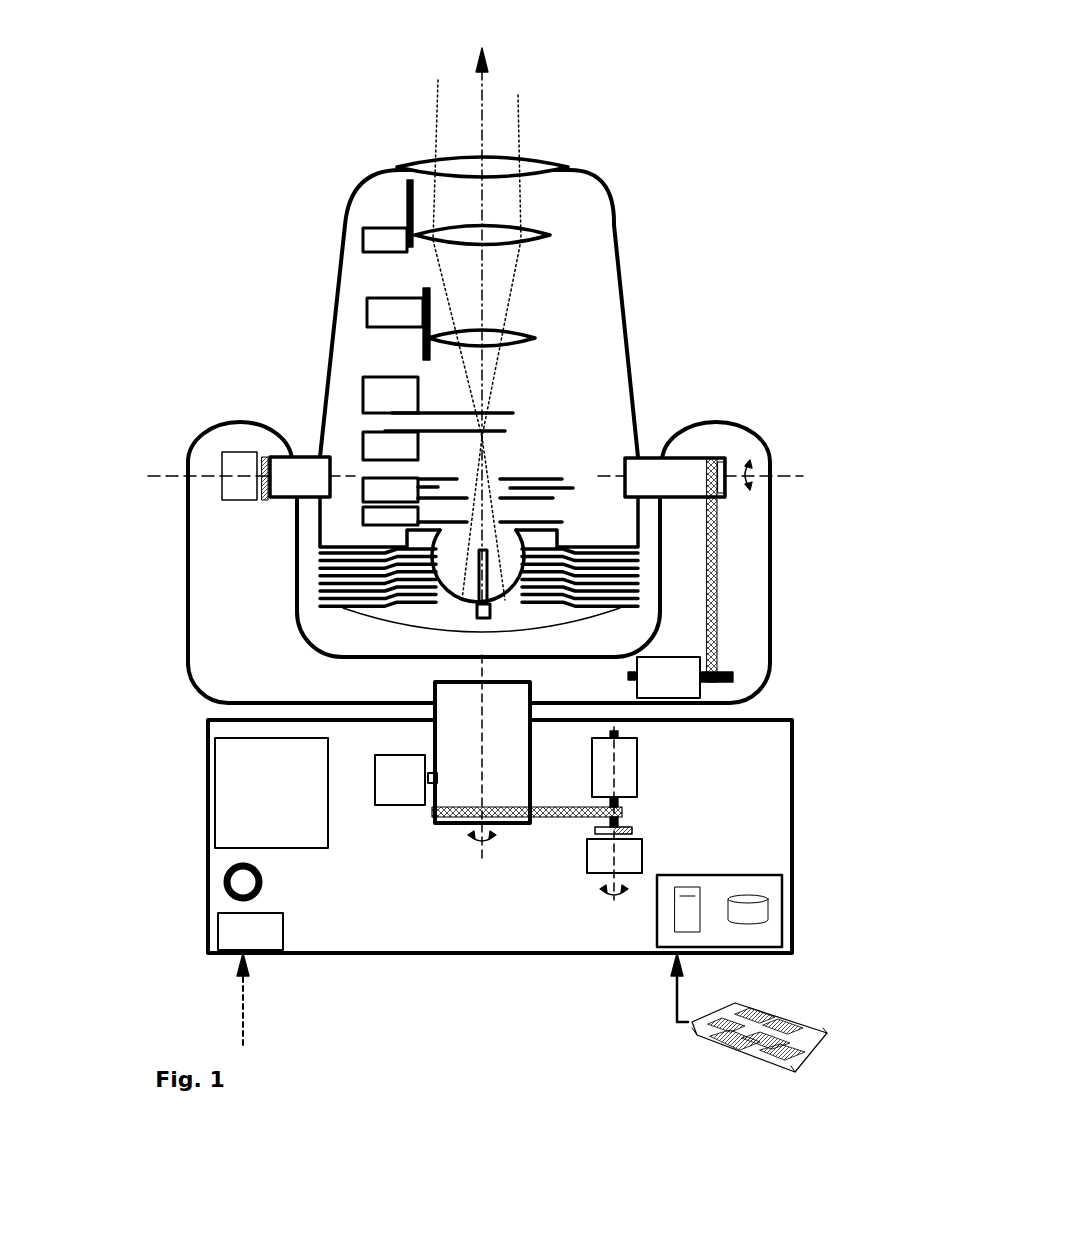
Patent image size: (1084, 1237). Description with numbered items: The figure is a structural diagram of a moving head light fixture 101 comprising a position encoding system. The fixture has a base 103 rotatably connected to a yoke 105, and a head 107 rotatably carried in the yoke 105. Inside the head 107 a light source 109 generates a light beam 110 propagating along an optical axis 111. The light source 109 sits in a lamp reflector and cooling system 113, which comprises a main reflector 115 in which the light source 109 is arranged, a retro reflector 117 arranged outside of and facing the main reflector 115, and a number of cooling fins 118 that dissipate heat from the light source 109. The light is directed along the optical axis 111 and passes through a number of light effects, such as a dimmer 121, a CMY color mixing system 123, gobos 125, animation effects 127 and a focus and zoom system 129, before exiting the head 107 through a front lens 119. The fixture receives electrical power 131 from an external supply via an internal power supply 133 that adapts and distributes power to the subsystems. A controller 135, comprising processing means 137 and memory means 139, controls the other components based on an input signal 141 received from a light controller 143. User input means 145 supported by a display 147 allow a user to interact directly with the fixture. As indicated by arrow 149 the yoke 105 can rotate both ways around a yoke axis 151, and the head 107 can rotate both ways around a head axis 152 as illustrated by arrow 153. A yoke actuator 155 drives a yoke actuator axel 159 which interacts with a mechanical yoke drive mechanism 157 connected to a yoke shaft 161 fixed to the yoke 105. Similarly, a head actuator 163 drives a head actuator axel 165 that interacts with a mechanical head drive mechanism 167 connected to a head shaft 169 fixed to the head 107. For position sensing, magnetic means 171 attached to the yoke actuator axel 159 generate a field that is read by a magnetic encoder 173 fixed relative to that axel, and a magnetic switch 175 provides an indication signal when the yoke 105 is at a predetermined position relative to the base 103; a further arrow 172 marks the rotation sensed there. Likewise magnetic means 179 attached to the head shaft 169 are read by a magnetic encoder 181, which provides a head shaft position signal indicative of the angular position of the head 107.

The moving head light fixture 101 is at (222, 64).
The base 103 is at (427, 957).
The yoke 105 is at (227, 425).
The head 107 is at (353, 200).
The light source 109 is at (483, 600).
The light beam 110 is at (436, 110).
The optical axis 111 is at (480, 90).
The lamp reflector and cooling system 113 is at (372, 536).
The main reflector 115 is at (503, 533).
The retro reflector 117 is at (453, 548).
The cooling fins 118 is at (315, 620).
The front lens 119 is at (404, 158).
The dimmer 121 is at (462, 515).
The CMY color mixing system 123 is at (468, 490).
The gobos 125 is at (434, 445).
The animation effects 127 is at (438, 395).
The focus and zoom system 129 is at (557, 198).
The electrical power 131 is at (257, 999).
The internal power supply 133 is at (250, 931).
The controller 135 is at (763, 913).
The processing means 137 is at (690, 923).
The memory means 139 is at (765, 910).
The input signal 141 is at (661, 990).
The light controller 143 is at (759, 1054).
The user input means 145 is at (240, 881).
The display 147 is at (271, 793).
The arrow 149 is at (472, 835).
The yoke axis 151 is at (470, 832).
The head axis 152 is at (786, 476).
The arrow 153 is at (748, 462).
The yoke actuator 155 is at (614, 779).
The mechanical yoke drive mechanism 157 is at (559, 835).
The yoke actuator axel 159 is at (622, 810).
The yoke shaft 161 is at (435, 730).
The head actuator 163 is at (664, 677).
The head actuator axel 165 is at (734, 676).
The mechanical head drive mechanism 167 is at (715, 612).
The head shaft 169 is at (698, 457).
The magnetic means 171 is at (632, 830).
The rotation direction 172 is at (604, 893).
The magnetic encoder 173 is at (614, 856).
The magnetic switch 175 is at (406, 780).
The magnetic means 179 is at (262, 498).
The magnetic encoder 181 is at (237, 476).